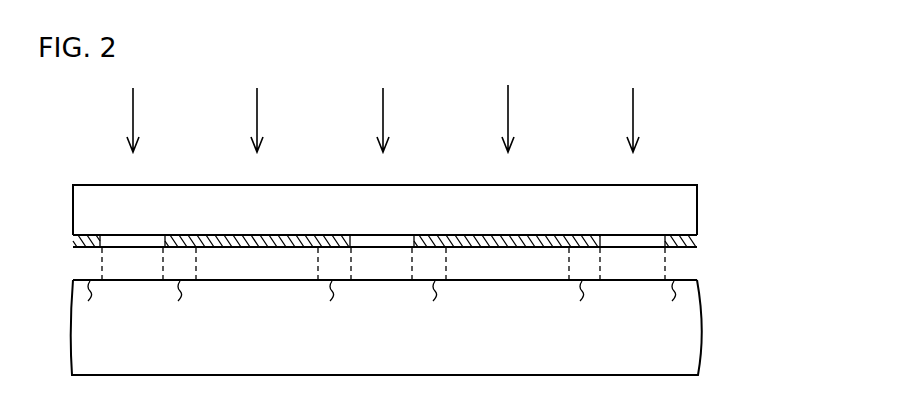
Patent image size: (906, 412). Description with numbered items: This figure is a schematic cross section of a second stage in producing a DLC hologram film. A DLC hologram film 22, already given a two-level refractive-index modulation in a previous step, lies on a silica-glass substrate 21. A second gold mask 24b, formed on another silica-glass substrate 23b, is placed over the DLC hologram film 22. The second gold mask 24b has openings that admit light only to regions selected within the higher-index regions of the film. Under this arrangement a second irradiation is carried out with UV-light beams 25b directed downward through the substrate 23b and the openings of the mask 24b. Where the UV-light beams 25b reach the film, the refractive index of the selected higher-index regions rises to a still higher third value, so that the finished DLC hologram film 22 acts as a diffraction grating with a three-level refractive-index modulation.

The silica-glass substrate 21 is at (698, 346).
The DLC hologram film 22 is at (703, 249).
The silica-glass substrate 23b is at (690, 211).
The second gold mask 24b is at (311, 237).
The UV-light beams 25b is at (640, 112).